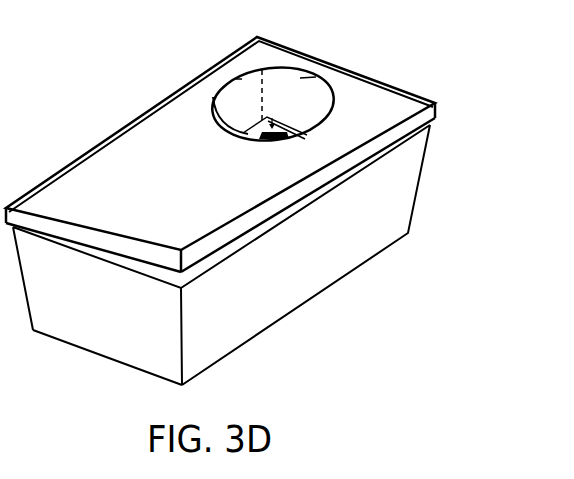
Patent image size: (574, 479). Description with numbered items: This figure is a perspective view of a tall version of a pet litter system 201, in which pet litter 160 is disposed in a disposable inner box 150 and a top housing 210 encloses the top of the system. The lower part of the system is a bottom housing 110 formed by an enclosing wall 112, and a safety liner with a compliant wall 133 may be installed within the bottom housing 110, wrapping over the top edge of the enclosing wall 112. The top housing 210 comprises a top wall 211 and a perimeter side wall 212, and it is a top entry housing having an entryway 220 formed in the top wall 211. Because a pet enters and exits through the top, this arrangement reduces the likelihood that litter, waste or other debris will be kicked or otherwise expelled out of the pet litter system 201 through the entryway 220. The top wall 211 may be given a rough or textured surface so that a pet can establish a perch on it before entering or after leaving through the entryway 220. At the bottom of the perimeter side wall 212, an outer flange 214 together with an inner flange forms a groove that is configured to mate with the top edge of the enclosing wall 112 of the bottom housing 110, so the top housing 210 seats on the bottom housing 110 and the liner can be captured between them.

The bottom housing 110 is at (306, 311).
The enclosing wall 112 is at (228, 320).
The compliant wall 133 is at (252, 108).
The disposable inner box 150 is at (213, 98).
The pet litter 160 is at (238, 70).
The pet litter system 201 is at (219, 47).
The top housing 210 is at (98, 138).
The top wall 211 is at (143, 197).
The perimeter side wall 212 is at (318, 172).
The outer flange 214 is at (280, 213).
The entryway 220 is at (277, 67).